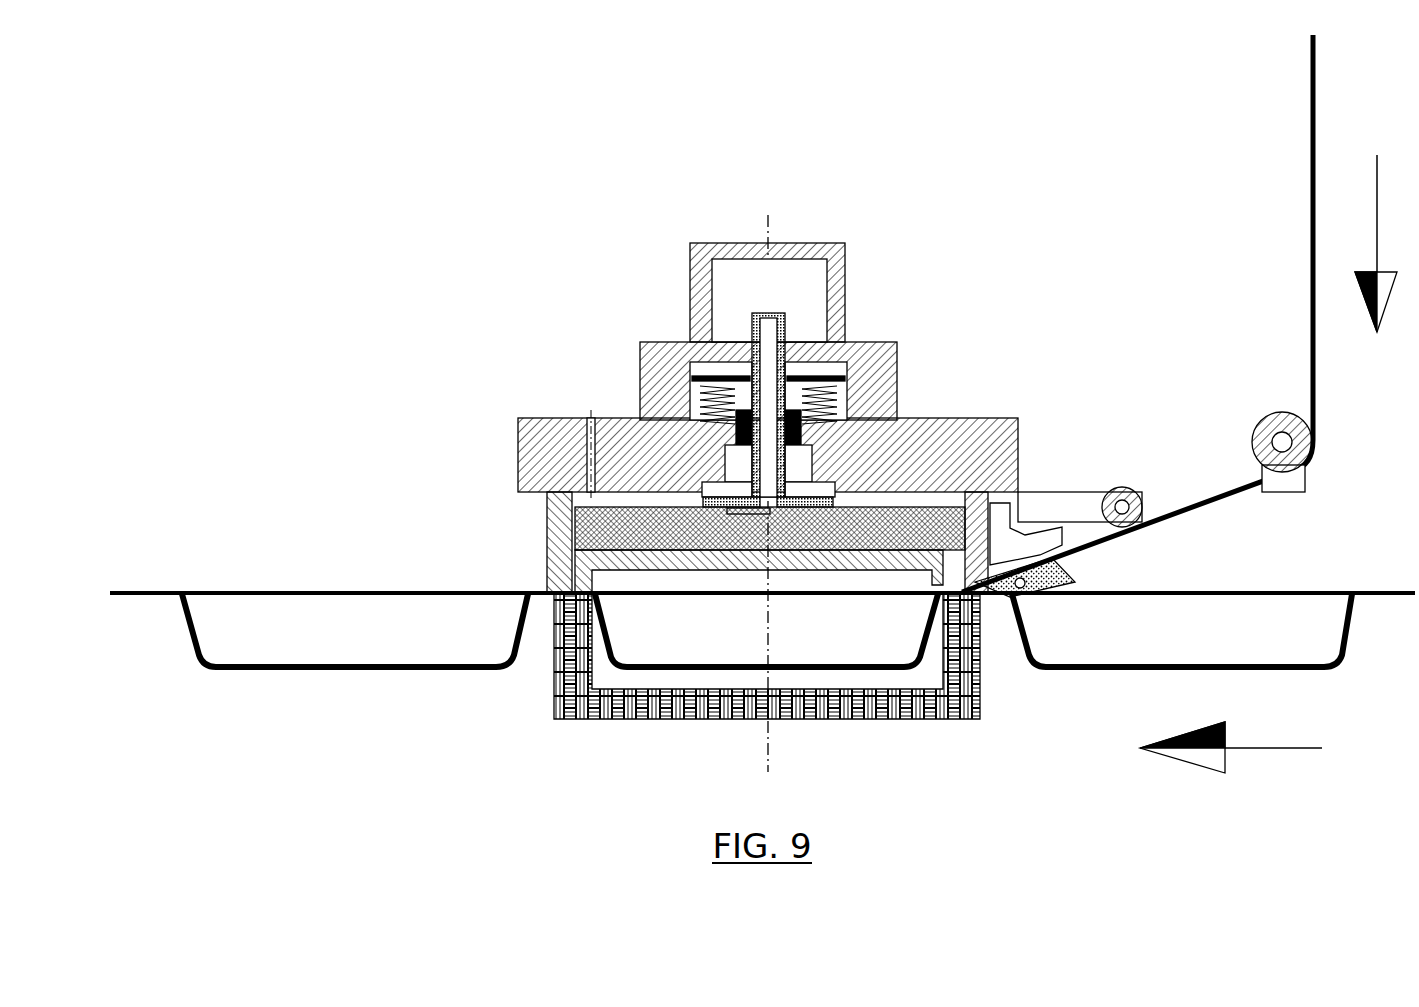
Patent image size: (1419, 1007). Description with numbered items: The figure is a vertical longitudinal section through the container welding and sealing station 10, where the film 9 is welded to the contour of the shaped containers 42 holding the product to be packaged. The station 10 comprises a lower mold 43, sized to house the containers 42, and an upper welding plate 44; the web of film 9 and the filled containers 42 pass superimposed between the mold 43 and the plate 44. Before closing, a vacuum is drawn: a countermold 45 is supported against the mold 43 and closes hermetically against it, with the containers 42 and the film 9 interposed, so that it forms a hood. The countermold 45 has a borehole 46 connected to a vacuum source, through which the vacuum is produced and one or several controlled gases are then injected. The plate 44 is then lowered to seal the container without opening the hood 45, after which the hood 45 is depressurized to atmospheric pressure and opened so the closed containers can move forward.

The film 9 is at (1313, 173).
The container welding and sealing station 10 is at (1012, 314).
The shaped containers 42 is at (363, 665).
The lower mold 43 is at (622, 703).
The upper welding plate 44 is at (592, 575).
The countermold 45 is at (562, 528).
The borehole 46 is at (590, 448).